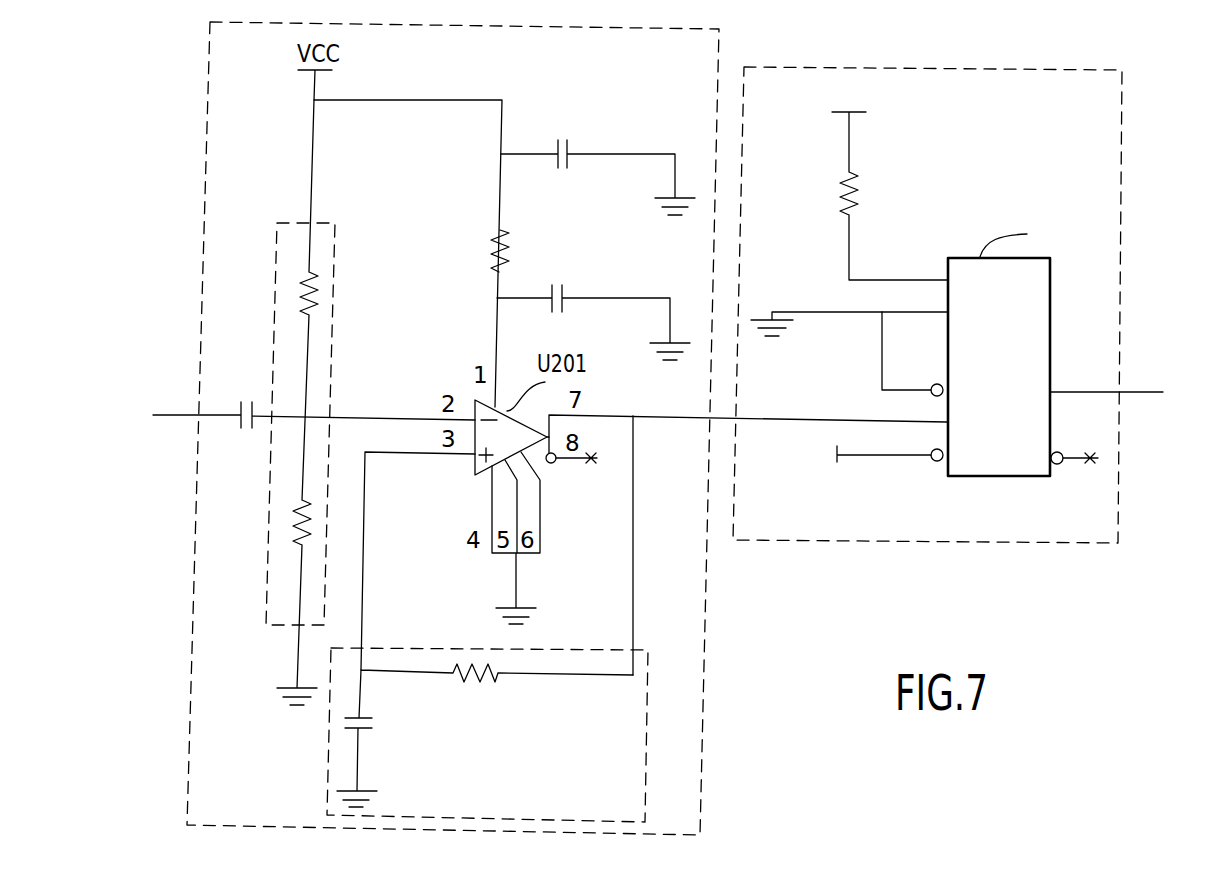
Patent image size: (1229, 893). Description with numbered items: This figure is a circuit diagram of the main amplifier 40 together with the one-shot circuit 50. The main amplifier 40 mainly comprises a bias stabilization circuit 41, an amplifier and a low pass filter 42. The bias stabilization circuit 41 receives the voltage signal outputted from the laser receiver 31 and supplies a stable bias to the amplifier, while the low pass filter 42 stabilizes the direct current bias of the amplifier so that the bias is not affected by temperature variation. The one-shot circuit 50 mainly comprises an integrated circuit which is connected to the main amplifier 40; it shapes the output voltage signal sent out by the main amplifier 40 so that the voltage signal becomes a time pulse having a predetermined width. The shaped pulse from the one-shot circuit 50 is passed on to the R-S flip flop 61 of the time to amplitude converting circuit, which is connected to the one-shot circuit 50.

The laser receiver 31 is at (296, 414).
The main amplifier 40 is at (703, 650).
The bias stabilization circuit 41 is at (322, 223).
The low pass filter 42 is at (645, 782).
The one-shot circuit 50 is at (1045, 545).
The R-S flip flop 61 is at (1126, 392).